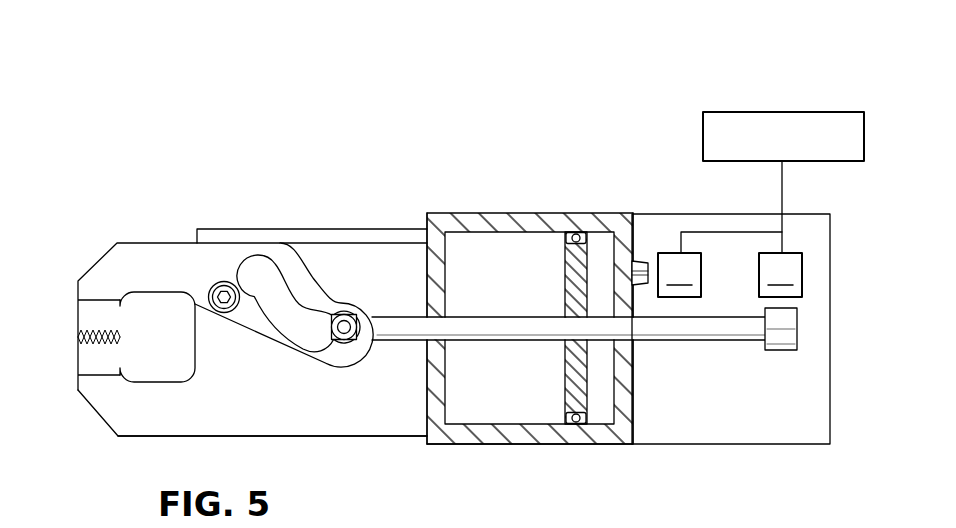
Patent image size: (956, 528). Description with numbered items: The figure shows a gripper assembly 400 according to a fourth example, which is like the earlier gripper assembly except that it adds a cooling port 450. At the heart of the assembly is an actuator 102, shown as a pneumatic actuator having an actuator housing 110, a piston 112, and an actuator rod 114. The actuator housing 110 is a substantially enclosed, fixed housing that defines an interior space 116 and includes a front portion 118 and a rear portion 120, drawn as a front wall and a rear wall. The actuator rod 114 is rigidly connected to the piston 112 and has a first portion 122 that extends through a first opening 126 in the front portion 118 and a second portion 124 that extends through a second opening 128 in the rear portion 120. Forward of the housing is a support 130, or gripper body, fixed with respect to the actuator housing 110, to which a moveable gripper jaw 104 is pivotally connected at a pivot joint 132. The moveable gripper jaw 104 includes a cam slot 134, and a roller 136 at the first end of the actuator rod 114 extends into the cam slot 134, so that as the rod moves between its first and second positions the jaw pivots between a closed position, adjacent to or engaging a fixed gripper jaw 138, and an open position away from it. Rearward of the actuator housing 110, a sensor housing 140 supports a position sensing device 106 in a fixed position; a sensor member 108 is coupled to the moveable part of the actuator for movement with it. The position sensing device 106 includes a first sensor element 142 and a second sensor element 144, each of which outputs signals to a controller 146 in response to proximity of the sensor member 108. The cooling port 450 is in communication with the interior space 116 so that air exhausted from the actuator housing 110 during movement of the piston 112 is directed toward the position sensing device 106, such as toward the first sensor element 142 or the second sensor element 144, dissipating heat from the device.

The gripper assembly 400 is at (132, 164).
The moveable gripper jaw 104 is at (87, 258).
The fixed gripper jaw 138 is at (101, 437).
The first portion 122 is at (391, 340).
The support 130 is at (320, 226).
The cam slot 134 is at (258, 252).
The pivot joint 132 is at (211, 281).
The roller 136 is at (327, 330).
The actuator 102 is at (529, 304).
The actuator housing 110 is at (432, 210).
The interior space 116 is at (487, 245).
The front portion 118 is at (424, 236).
The rear portion 120 is at (631, 418).
The piston 112 is at (560, 245).
The actuator rod 114 is at (505, 340).
The first opening 126 is at (548, 328).
The second opening 128 is at (624, 331).
The second portion 124 is at (792, 392).
The sensor member 108 is at (780, 347).
The sensor housing 140 is at (780, 441).
The cooling port 450 is at (638, 258).
The second sensor element 144 is at (720, 264).
The first sensor element 142 is at (780, 275).
The controller 146 is at (765, 109).
The position sensing device 106 is at (702, 106).